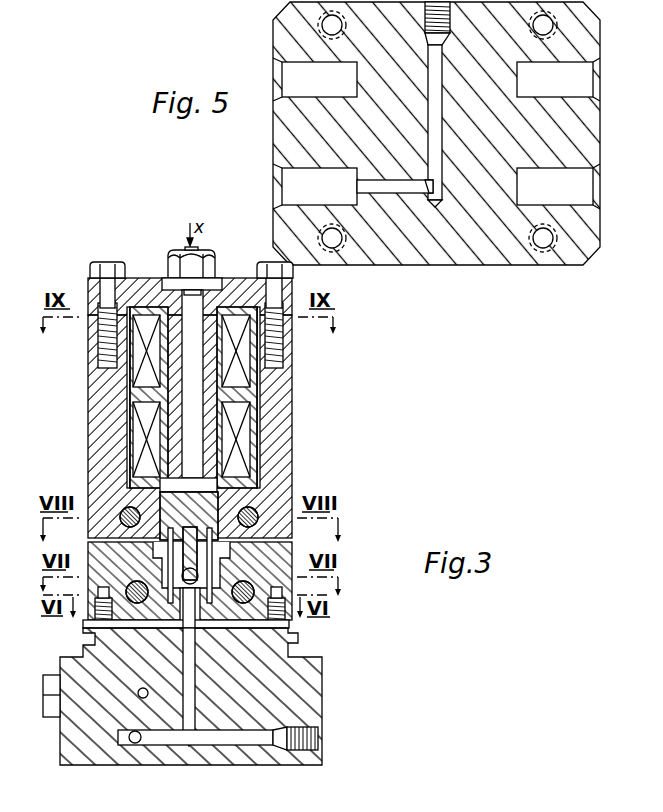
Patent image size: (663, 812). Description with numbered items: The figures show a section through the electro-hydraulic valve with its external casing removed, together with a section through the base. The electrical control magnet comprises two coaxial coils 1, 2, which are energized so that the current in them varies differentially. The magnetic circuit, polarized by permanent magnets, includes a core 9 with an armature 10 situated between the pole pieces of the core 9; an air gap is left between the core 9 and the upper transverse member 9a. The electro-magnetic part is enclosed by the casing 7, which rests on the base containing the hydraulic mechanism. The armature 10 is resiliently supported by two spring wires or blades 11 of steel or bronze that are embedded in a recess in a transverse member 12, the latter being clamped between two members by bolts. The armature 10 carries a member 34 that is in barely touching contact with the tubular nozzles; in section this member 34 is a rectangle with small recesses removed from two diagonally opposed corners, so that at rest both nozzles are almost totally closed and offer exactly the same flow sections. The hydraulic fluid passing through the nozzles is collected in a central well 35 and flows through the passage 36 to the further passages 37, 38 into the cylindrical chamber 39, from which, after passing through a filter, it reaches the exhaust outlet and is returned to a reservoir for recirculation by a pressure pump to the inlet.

In FIG. 3, the coil 1 is at (232, 374).
In FIG. 3, the coil 2 is at (237, 432).
In FIG. 5, the casing 7 is at (302, 130).
In FIG. 3, the casing 7 is at (300, 707).
In FIG. 3, the core 9 is at (108, 447).
In FIG. 3, the upper transverse member 9a is at (138, 287).
In FIG. 3, the armature 10 is at (203, 510).
In FIG. 3, the spring wires 11 is at (168, 558).
In FIG. 3, the transverse member 12 is at (265, 557).
In FIG. 3, the member 34 is at (177, 606).
In FIG. 3, the central well 35 is at (180, 586).
In FIG. 3, the passage 36 is at (192, 693).
In FIG. 5, the passage 37 is at (437, 136).
In FIG. 3, the passage 37 is at (203, 743).
In FIG. 5, the passage 38 is at (378, 183).
In FIG. 3, the passage 38 is at (135, 744).
In FIG. 5, the cylindrical chamber 39 is at (305, 188).